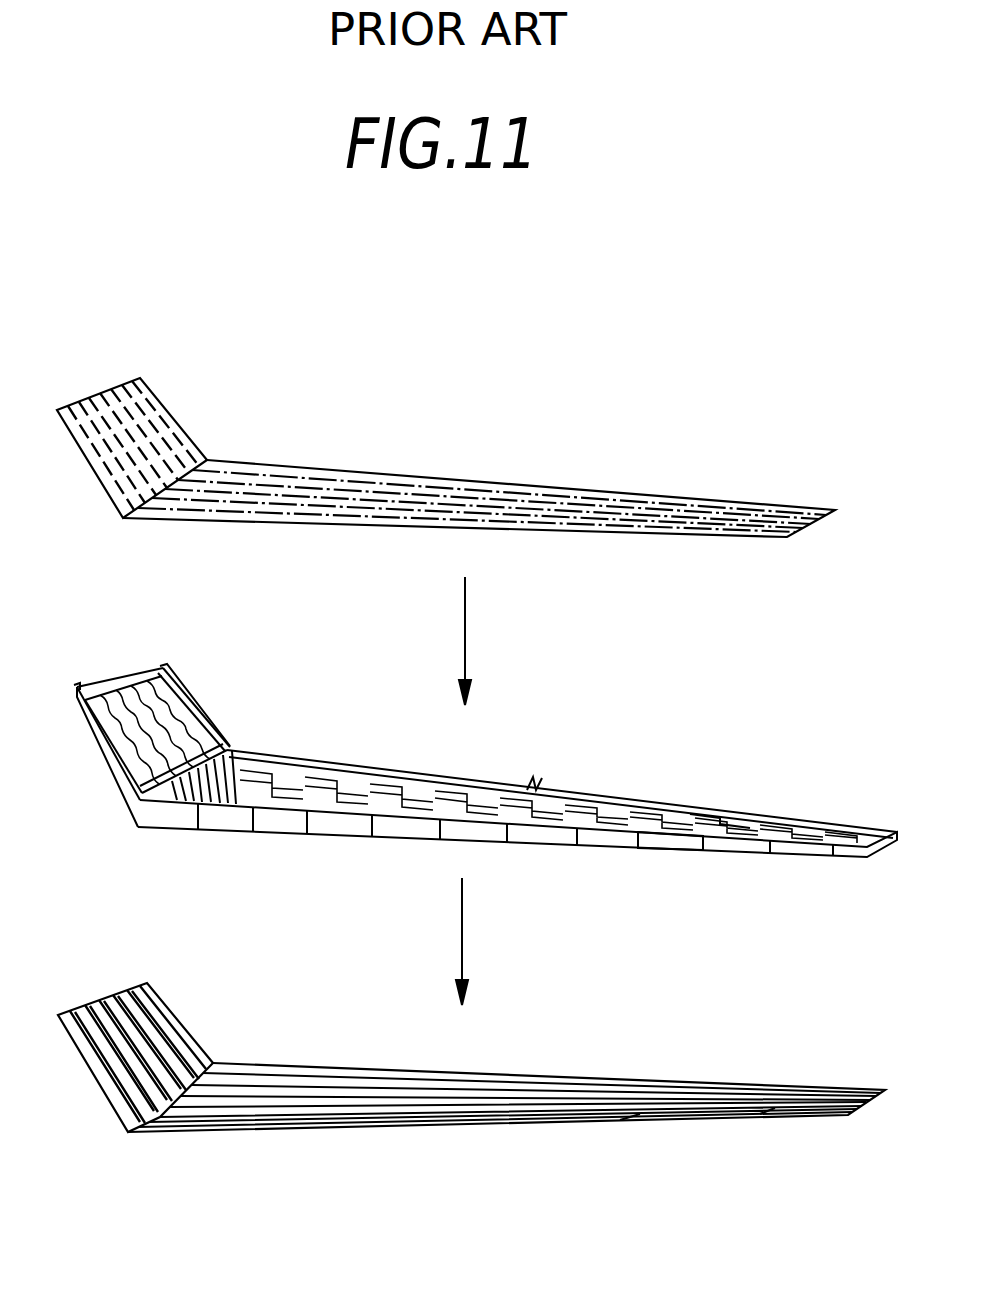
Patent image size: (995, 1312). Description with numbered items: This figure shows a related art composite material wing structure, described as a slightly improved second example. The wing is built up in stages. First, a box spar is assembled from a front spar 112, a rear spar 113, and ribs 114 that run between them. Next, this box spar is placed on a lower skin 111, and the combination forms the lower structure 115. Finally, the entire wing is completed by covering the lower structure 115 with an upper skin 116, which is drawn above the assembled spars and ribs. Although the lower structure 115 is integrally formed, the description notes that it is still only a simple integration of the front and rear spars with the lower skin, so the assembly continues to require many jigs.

The lower skin 111 is at (430, 1072).
The front spar 112 is at (521, 848).
The rear spar 113 is at (690, 817).
The ribs 114 is at (530, 787).
The lower structure 115 is at (652, 855).
The upper skin 116 is at (287, 467).